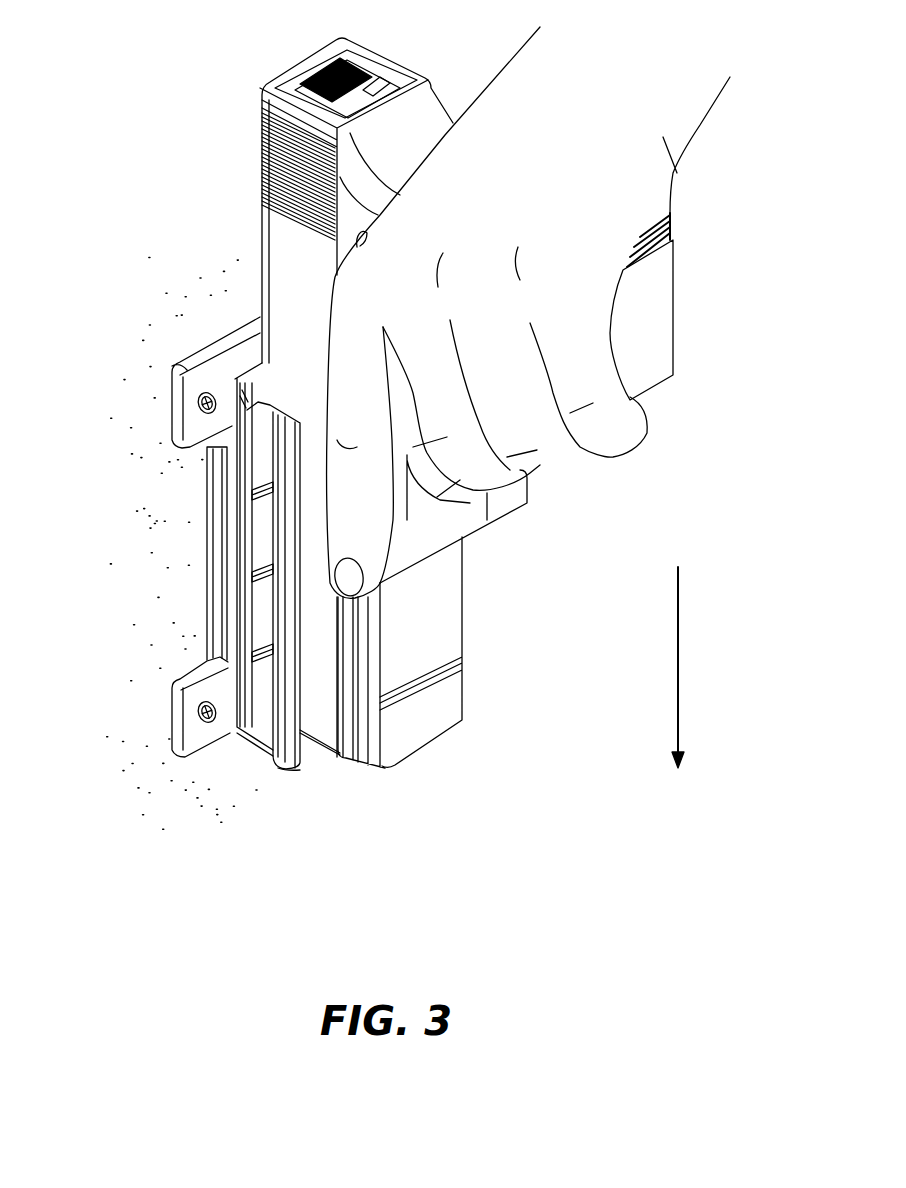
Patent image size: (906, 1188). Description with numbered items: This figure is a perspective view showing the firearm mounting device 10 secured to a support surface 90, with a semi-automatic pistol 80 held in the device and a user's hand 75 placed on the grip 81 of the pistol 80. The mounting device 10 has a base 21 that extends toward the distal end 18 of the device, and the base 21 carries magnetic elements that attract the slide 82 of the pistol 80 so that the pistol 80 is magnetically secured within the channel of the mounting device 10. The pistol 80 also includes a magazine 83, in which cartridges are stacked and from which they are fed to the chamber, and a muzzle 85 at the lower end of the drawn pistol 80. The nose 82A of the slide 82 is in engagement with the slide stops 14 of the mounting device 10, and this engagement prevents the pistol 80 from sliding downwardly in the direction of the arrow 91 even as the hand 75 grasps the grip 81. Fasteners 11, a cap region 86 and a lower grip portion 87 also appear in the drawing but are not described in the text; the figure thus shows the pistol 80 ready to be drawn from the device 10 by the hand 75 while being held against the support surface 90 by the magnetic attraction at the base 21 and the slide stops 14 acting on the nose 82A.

The firearm mounting device 10 is at (177, 398).
The fasteners (screws) 11 is at (207, 393).
The slide stops 14 is at (300, 735).
The distal end 18 is at (177, 710).
The base 21 is at (207, 588).
The hand 75 is at (557, 185).
The semi-automatic pistol 80 is at (425, 118).
The grip 81 is at (678, 222).
The slide 82 is at (287, 330).
The nose of the slide 82A is at (315, 747).
The magazine 83 is at (647, 322).
The muzzle 85 is at (330, 728).
The top cap 86 is at (283, 77).
The grip / battery portion 87 is at (430, 598).
The support surface 90 is at (153, 503).
The arrow 91 is at (680, 665).